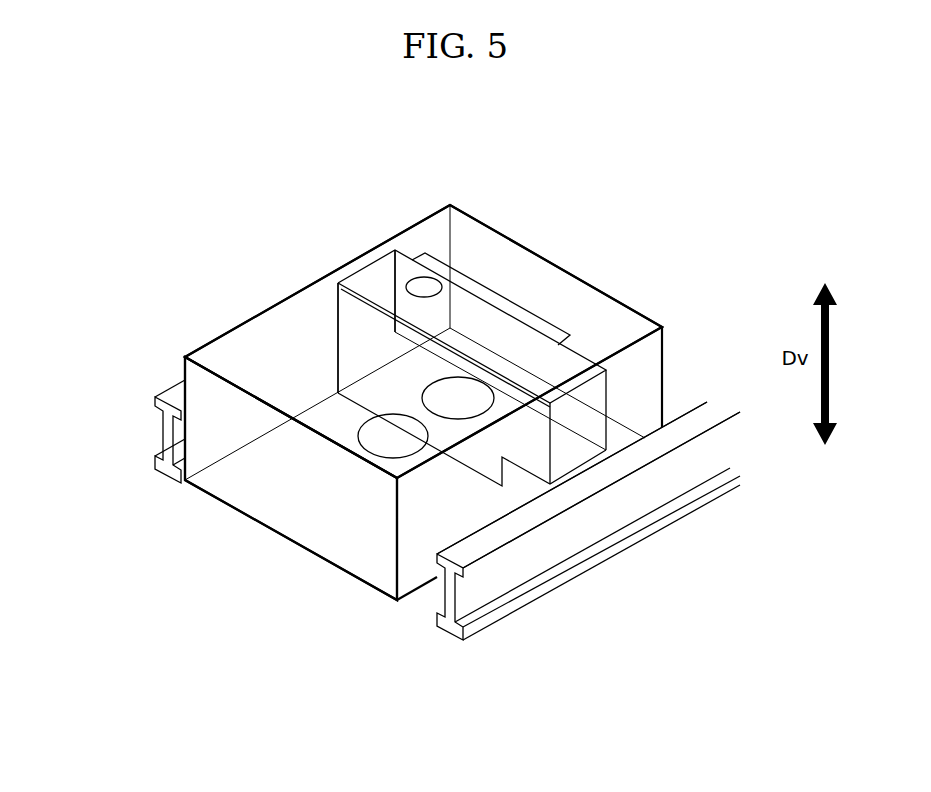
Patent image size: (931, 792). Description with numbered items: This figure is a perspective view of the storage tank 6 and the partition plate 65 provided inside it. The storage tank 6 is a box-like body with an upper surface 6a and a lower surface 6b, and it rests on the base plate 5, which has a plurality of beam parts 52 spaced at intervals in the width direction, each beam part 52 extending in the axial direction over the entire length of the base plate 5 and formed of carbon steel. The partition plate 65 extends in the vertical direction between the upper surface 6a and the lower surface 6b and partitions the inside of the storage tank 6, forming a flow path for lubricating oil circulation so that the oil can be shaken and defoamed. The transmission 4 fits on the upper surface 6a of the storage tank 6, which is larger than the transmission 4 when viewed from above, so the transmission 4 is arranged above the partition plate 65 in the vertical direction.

The transmission 4 is at (502, 292).
The base plate 5 is at (595, 566).
The storage tank 6 is at (553, 264).
The upper surface 6a is at (290, 318).
The lower surface 6b is at (297, 547).
The beam part 52 is at (163, 393).
The partition plate 65 is at (345, 300).